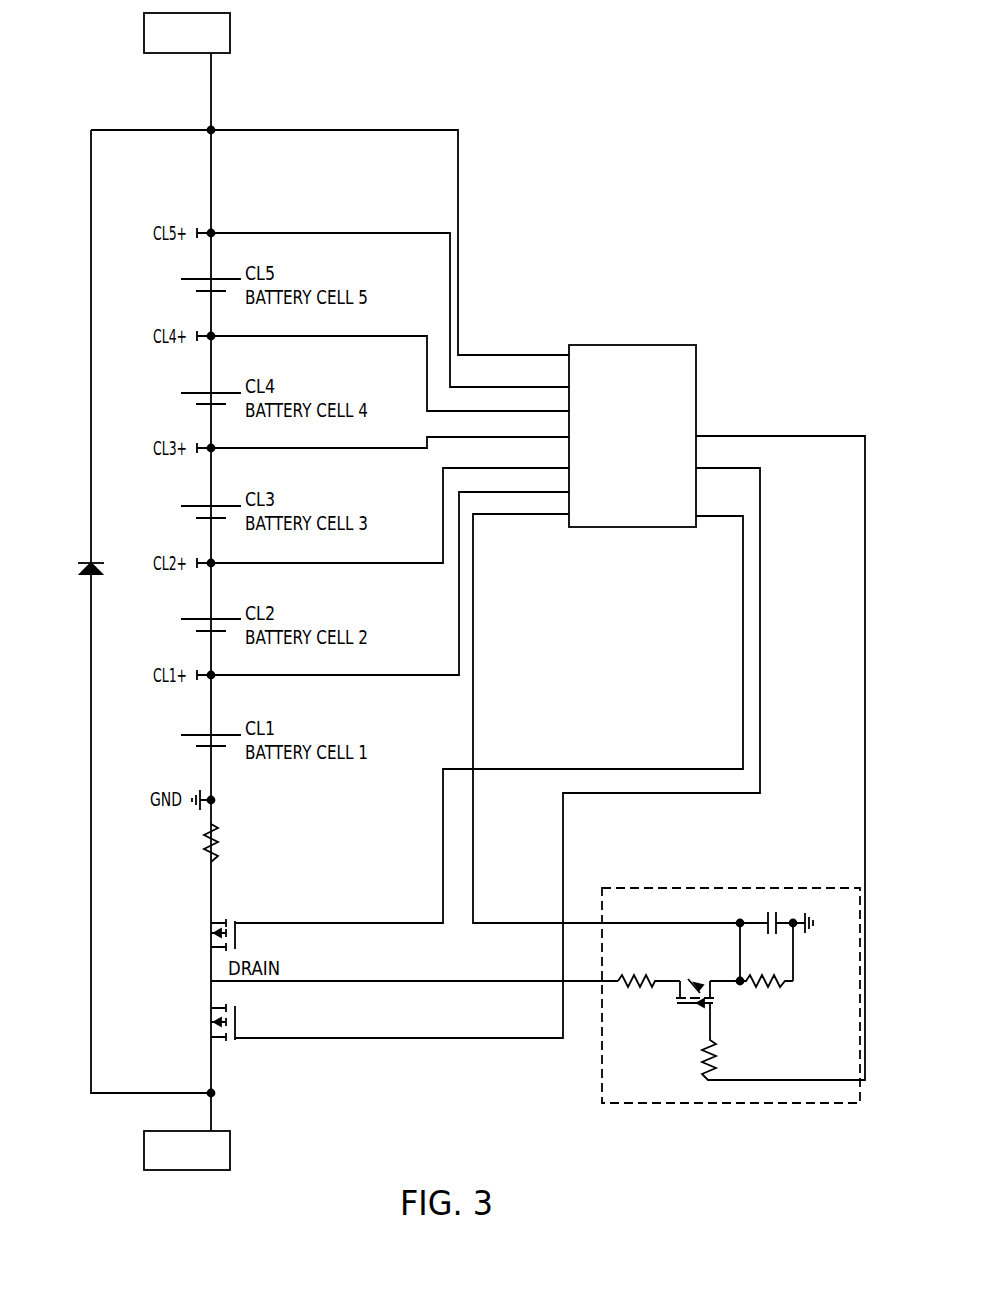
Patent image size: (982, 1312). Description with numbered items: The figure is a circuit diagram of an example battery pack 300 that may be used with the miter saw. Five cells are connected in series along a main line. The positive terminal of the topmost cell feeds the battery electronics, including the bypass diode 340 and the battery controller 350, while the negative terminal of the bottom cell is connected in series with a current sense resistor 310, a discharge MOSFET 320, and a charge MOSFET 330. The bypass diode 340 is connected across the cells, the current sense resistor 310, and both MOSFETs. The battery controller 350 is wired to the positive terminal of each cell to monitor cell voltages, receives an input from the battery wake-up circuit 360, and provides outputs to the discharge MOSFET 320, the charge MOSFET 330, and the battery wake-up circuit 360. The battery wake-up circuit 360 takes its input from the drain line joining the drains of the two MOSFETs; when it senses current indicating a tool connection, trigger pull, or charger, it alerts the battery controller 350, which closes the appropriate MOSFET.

The battery pack 300 is at (114, 89).
The current sense resistor 310 is at (206, 851).
The discharge MOSFET 320 is at (206, 926).
The charge MOSFET 330 is at (206, 1016).
The bypass diode 340 is at (90, 554).
The battery controller 350 is at (633, 528).
The battery wake-up circuit 360 is at (601, 1074).